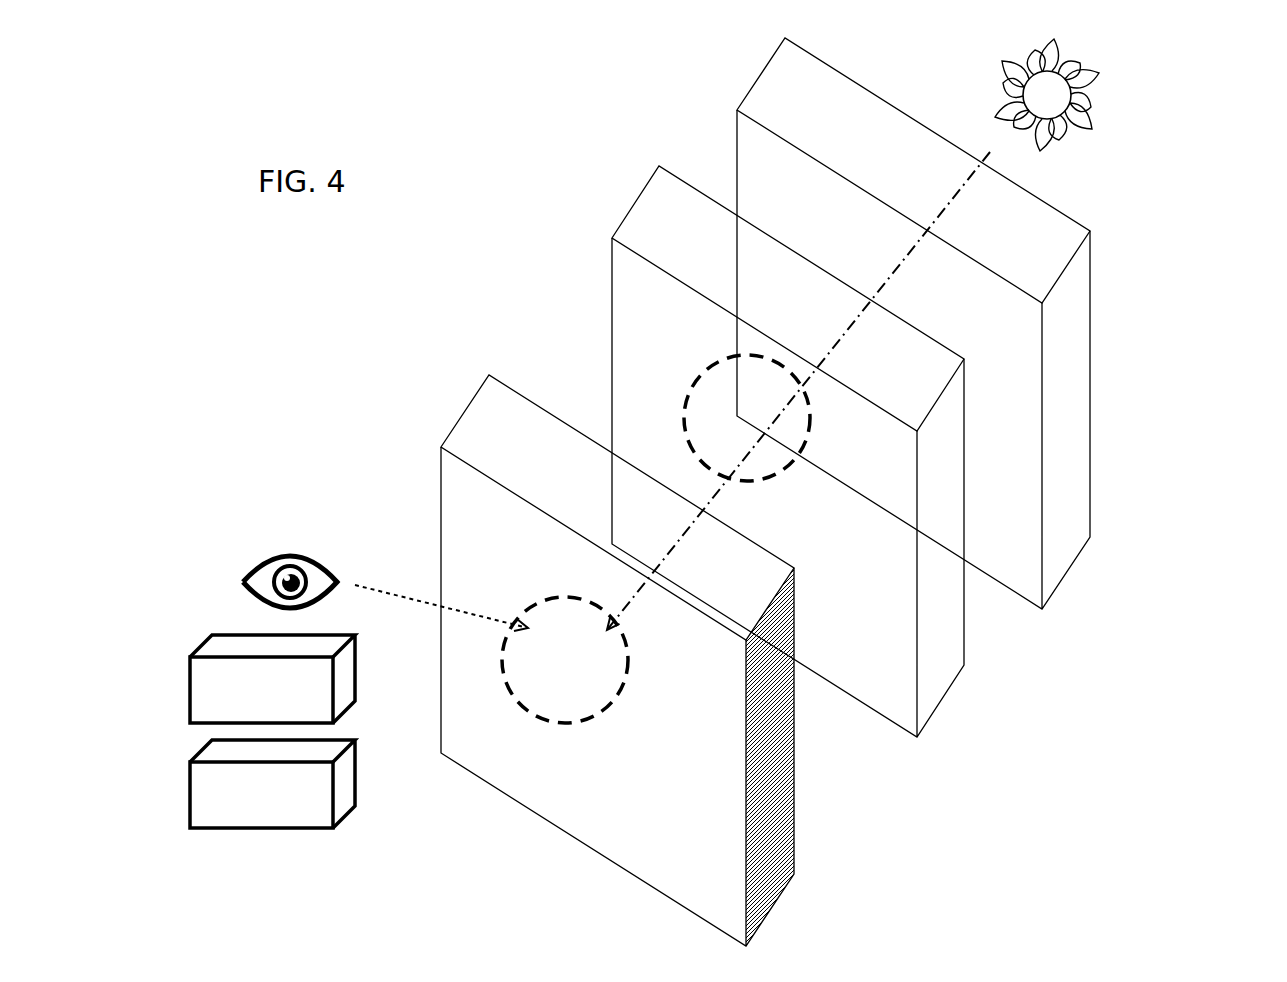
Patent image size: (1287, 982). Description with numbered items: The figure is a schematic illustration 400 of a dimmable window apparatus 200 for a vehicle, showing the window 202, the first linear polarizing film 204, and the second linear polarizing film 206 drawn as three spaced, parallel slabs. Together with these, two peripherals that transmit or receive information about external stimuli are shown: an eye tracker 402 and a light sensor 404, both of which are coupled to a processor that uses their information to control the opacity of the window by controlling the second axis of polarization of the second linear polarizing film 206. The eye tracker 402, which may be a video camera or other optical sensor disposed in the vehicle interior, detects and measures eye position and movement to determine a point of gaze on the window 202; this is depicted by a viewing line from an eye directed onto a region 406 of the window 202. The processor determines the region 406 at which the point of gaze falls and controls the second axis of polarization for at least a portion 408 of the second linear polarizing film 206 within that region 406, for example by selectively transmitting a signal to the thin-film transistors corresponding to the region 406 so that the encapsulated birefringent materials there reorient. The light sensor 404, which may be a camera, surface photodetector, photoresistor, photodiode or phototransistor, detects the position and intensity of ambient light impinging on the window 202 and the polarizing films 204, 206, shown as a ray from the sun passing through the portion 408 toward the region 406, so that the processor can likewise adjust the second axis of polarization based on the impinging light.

The dimmable window apparatus 200 is at (795, 492).
The window 202 is at (617, 660).
The first linear polarizing film 204 is at (913, 323).
The second linear polarizing film 206 is at (788, 451).
The schematic illustration 400 is at (705, 692).
The eye tracker 402 is at (272, 784).
The light sensor 404 is at (272, 679).
The region 406 is at (565, 660).
The portion 408 is at (747, 418).